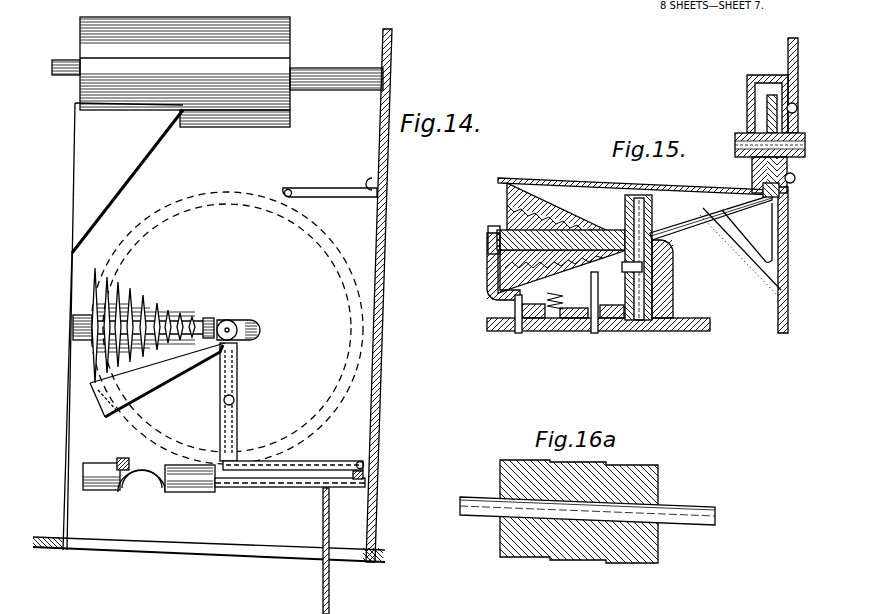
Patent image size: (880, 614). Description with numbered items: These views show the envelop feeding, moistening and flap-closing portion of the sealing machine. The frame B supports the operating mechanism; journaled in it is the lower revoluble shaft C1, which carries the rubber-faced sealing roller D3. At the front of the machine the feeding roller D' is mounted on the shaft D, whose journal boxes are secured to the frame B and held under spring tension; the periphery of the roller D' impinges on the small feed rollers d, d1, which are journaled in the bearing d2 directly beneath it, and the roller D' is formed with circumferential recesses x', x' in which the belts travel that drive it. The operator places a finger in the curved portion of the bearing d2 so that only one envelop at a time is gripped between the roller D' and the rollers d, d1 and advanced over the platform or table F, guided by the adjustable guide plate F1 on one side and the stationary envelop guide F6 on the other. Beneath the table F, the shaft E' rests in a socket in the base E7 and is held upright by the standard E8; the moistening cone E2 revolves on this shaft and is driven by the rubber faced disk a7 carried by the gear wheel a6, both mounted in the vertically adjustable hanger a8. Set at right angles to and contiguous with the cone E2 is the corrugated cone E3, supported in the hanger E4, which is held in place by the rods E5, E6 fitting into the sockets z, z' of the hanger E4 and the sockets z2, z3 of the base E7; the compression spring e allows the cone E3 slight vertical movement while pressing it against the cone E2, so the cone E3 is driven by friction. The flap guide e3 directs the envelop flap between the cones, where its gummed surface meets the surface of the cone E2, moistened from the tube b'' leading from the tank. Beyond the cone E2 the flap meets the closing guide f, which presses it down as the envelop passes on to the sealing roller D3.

In FIG. 14, the frame B is at (392, 208).
In FIG. 14, the sealing roller D3 is at (171, 72).
In FIG. 14, the lower revoluble shaft C1 is at (330, 70).
In FIG. 14, the closing guide f is at (125, 326).
In FIG. 14, the stationary envelop guide F6 is at (66, 402).
In FIG. 14, the moistening cone E2 is at (312, 226).
In FIG. 15, the moistening cone E2 is at (705, 210).
In FIG. 14, the corrugated cone E3 is at (138, 313).
In FIG. 15, the corrugated cone E3 is at (520, 205).
In FIG. 14, the standard E8 is at (258, 332).
In FIG. 15, the standard E8 is at (682, 255).
In FIG. 14, the flap guide e3 is at (171, 371).
In FIG. 14, the small feed roller d is at (103, 472).
In FIG. 14, the bearing d2 is at (152, 486).
In FIG. 14, the small feed roller d1 is at (203, 481).
In FIG. 14, the tube b'' is at (290, 462).
In FIG. 14, the guide plate F1 is at (323, 583).
In FIG. 15, the platform or table F is at (612, 181).
In FIG. 15, the hanger E4 is at (492, 298).
In FIG. 15, the rod E5 is at (519, 333).
In FIG. 15, the rod E6 is at (595, 333).
In FIG. 15, the base E7 is at (558, 331).
In FIG. 15, the socket z is at (530, 300).
In FIG. 15, the socket z' is at (616, 278).
In FIG. 15, the socket z2 is at (497, 335).
In FIG. 15, the socket z3 is at (612, 335).
In FIG. 15, the compression spring e is at (559, 301).
In FIG. 15, the shaft E' is at (659, 257).
In FIG. 15, the hanger a8 is at (748, 86).
In FIG. 15, the gear wheel a6 is at (750, 160).
In FIG. 15, the rubber faced disk a7 is at (782, 190).
In FIG. 16A, the feeding roller D' is at (579, 528).
In FIG. 16A, the shaft D is at (587, 523).
In FIG. 16A, the circumferential recess x' is at (581, 577).